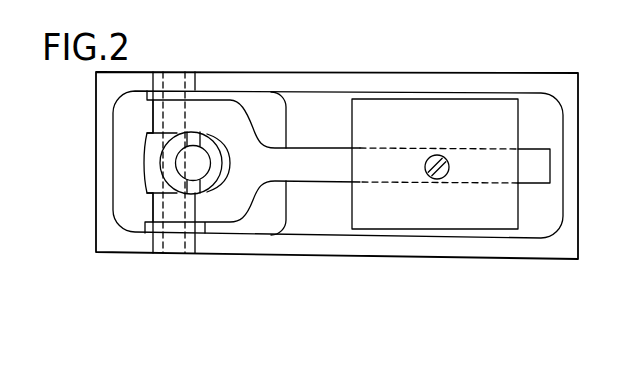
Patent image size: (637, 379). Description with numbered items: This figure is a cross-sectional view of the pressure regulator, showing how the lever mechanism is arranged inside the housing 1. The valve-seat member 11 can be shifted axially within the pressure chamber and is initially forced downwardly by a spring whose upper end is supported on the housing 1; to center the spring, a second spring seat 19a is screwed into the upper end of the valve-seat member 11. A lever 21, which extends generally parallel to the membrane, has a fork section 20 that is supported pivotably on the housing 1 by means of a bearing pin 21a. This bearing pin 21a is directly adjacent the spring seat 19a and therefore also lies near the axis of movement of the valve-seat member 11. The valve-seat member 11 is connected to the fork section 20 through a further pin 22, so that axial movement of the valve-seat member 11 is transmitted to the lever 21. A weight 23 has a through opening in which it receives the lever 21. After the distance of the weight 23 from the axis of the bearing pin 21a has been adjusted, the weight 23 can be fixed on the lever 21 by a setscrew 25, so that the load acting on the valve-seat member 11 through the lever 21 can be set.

The housing 1 is at (493, 72).
The valve-seat member 11 is at (165, 150).
The second spring seat 19a is at (190, 165).
The fork section 20 is at (228, 112).
The lever 21 is at (318, 143).
The bearing pin 21a is at (173, 82).
The further pin 22 is at (188, 190).
The weight 23 is at (452, 216).
The setscrew 25 is at (433, 158).